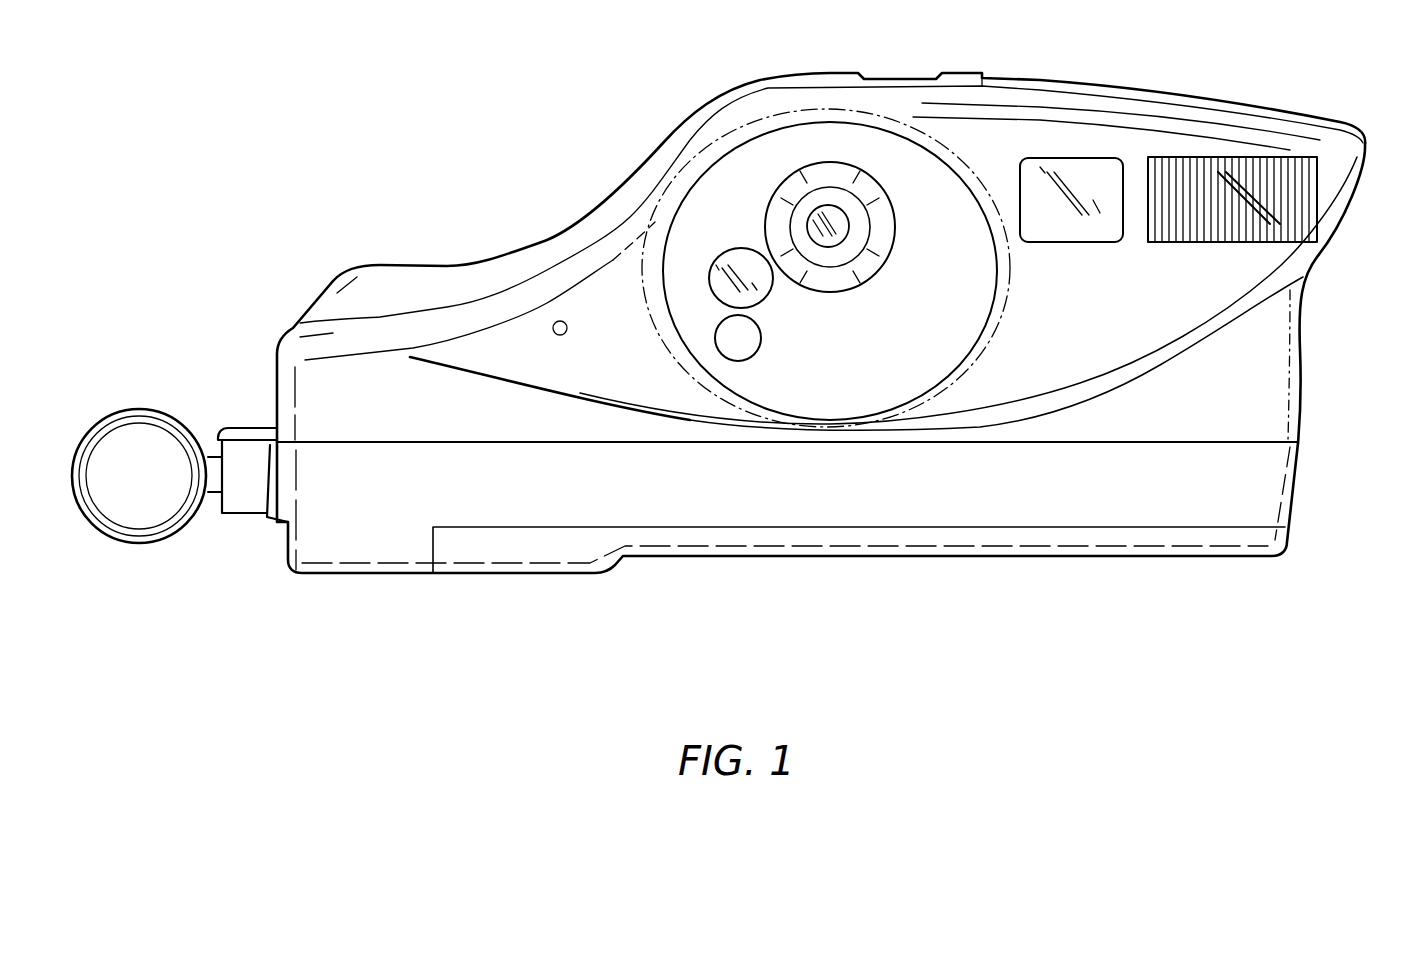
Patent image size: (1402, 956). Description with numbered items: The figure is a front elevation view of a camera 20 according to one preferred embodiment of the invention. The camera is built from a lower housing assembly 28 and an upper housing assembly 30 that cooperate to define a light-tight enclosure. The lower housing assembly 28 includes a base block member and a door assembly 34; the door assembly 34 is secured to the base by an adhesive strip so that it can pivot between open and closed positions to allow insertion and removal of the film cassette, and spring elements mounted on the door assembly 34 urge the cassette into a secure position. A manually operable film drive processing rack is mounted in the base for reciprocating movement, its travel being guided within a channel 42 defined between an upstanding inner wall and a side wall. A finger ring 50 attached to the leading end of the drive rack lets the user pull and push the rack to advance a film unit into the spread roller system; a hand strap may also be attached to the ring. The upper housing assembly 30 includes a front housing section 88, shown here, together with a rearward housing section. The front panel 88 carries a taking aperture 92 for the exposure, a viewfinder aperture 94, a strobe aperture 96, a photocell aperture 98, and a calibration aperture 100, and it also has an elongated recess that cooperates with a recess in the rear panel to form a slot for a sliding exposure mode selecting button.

The camera 20 is at (591, 154).
The lower housing assembly 28 is at (1316, 352).
The upper housing assembly 30 is at (1310, 480).
The door assembly 34 is at (1142, 533).
The channel 42 is at (245, 503).
The finger ring 50 is at (157, 544).
The front housing section 88 is at (1237, 415).
The taking aperture 92 is at (843, 225).
The viewfinder aperture 94 is at (1088, 164).
The strobe aperture 96 is at (1266, 160).
The photocell aperture 98 is at (758, 282).
The calibration aperture 100 is at (750, 338).